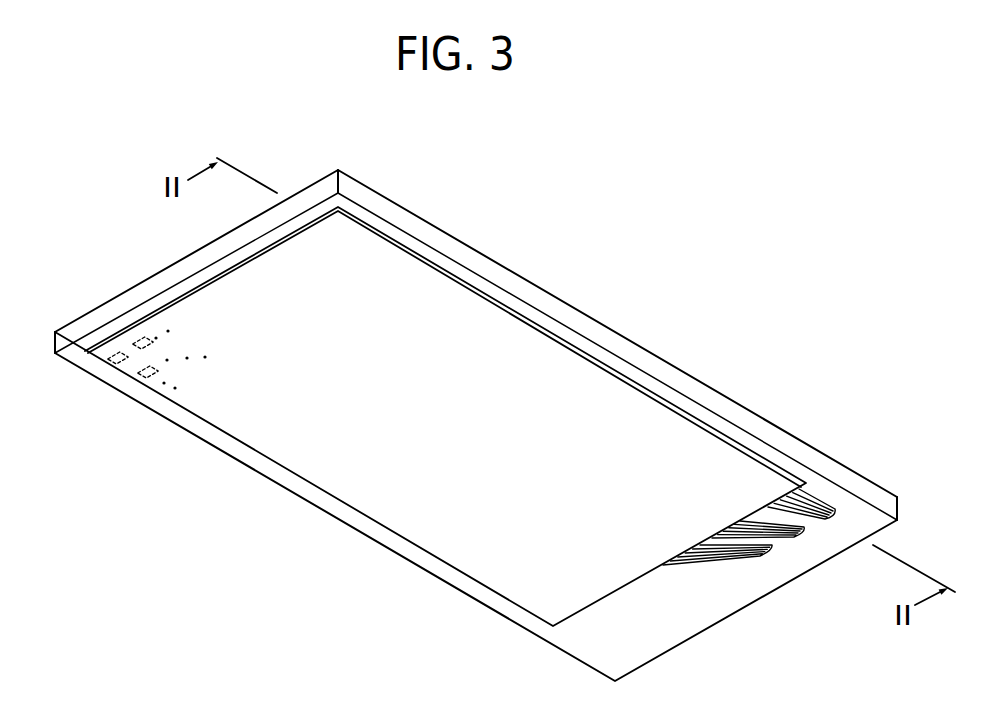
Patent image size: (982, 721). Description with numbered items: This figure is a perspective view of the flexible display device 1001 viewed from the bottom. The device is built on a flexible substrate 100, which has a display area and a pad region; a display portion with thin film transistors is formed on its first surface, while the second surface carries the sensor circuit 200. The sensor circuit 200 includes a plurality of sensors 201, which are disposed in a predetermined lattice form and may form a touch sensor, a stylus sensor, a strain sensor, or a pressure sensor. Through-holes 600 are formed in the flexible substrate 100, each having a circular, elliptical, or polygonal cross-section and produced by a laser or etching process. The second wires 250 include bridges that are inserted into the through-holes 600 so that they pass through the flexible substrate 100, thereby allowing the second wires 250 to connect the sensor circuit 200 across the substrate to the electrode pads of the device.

The flexible display device 1001 is at (484, 215).
The flexible substrate 100 is at (530, 295).
The sensor circuit 200 is at (548, 382).
The sensors 201 is at (100, 378).
The second wires 250 is at (812, 502).
The through-holes 600 is at (773, 550).